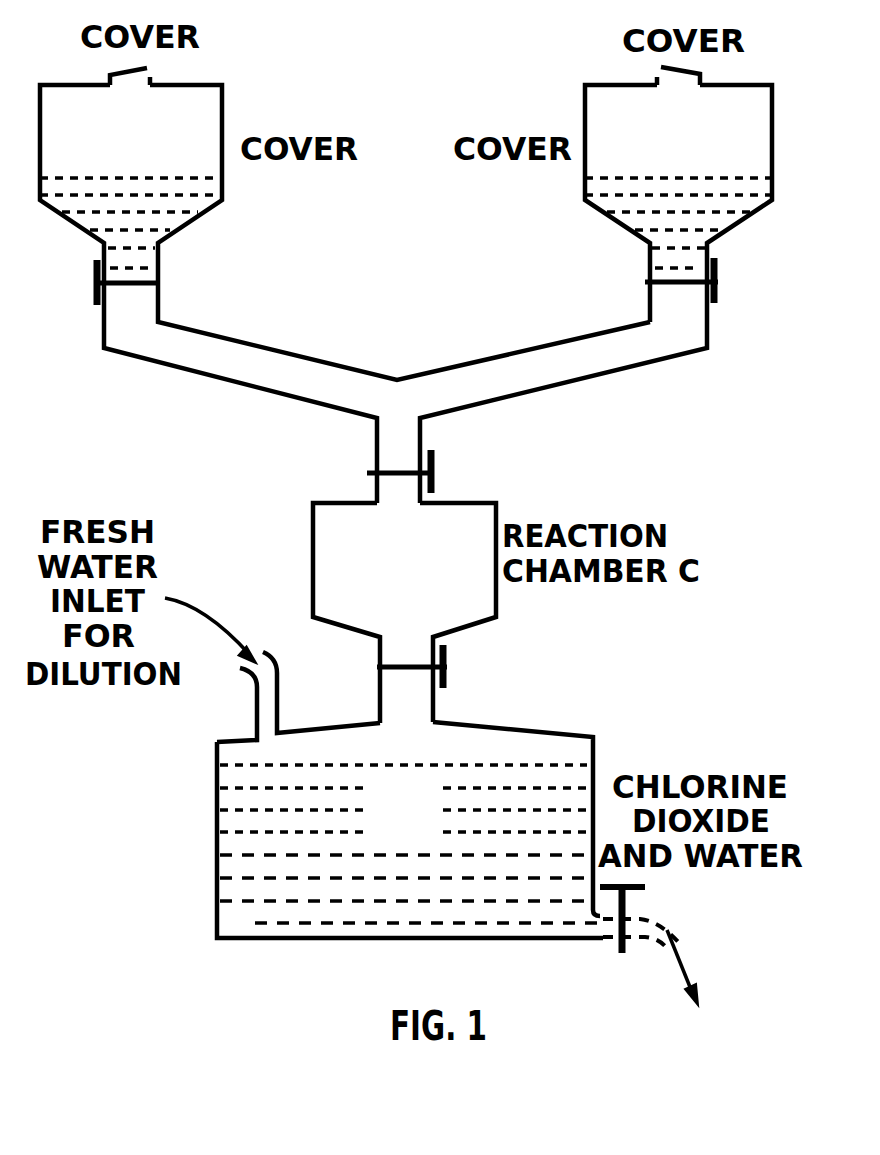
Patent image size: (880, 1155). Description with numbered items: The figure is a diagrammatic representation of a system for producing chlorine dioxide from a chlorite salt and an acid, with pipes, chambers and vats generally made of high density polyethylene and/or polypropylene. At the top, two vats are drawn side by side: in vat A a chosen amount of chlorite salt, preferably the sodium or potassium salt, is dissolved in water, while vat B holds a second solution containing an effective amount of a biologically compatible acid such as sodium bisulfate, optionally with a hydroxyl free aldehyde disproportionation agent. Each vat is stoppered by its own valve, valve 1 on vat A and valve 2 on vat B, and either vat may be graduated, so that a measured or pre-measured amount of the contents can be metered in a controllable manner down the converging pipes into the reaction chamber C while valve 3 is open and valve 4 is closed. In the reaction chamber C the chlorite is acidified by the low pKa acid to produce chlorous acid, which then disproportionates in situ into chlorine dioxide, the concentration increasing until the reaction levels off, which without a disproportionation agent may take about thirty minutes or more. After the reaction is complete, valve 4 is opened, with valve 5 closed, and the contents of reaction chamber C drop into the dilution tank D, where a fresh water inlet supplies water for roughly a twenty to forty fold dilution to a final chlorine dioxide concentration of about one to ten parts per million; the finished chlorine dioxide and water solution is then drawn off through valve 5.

The vat A is at (345, 285).
The vat B is at (596, 285).
The reaction chamber C is at (404, 613).
The dilution tank D is at (310, 795).
The valve 1 is at (207, 282).
The valve 2 is at (605, 280).
The valve 3 is at (475, 471).
The valve 4 is at (488, 666).
The valve 5 is at (694, 917).